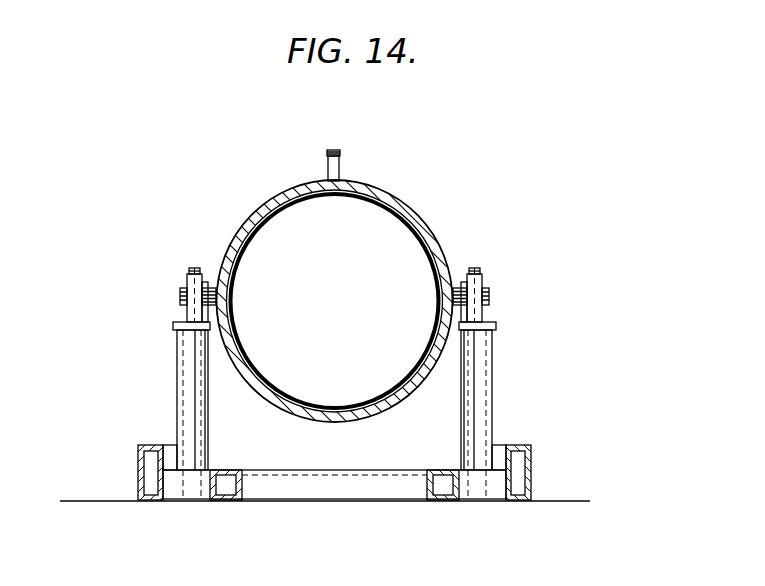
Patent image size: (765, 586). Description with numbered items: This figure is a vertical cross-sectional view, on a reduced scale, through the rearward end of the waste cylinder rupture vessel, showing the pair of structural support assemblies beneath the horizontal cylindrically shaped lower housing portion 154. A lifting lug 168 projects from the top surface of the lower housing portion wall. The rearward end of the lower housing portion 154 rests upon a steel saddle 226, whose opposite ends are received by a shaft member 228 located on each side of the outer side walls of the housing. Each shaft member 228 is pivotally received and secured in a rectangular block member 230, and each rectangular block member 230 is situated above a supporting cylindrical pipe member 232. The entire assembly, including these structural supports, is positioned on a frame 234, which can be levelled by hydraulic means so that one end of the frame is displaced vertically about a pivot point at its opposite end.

The lower housing portion 154 is at (427, 232).
The lifting lug 168 is at (339, 165).
The steel saddle 226 is at (366, 419).
The shaft member 228 is at (181, 291).
The rectangular block member 230 is at (187, 272).
The cylindrical pipe member 232 is at (186, 405).
The frame 234 is at (393, 500).